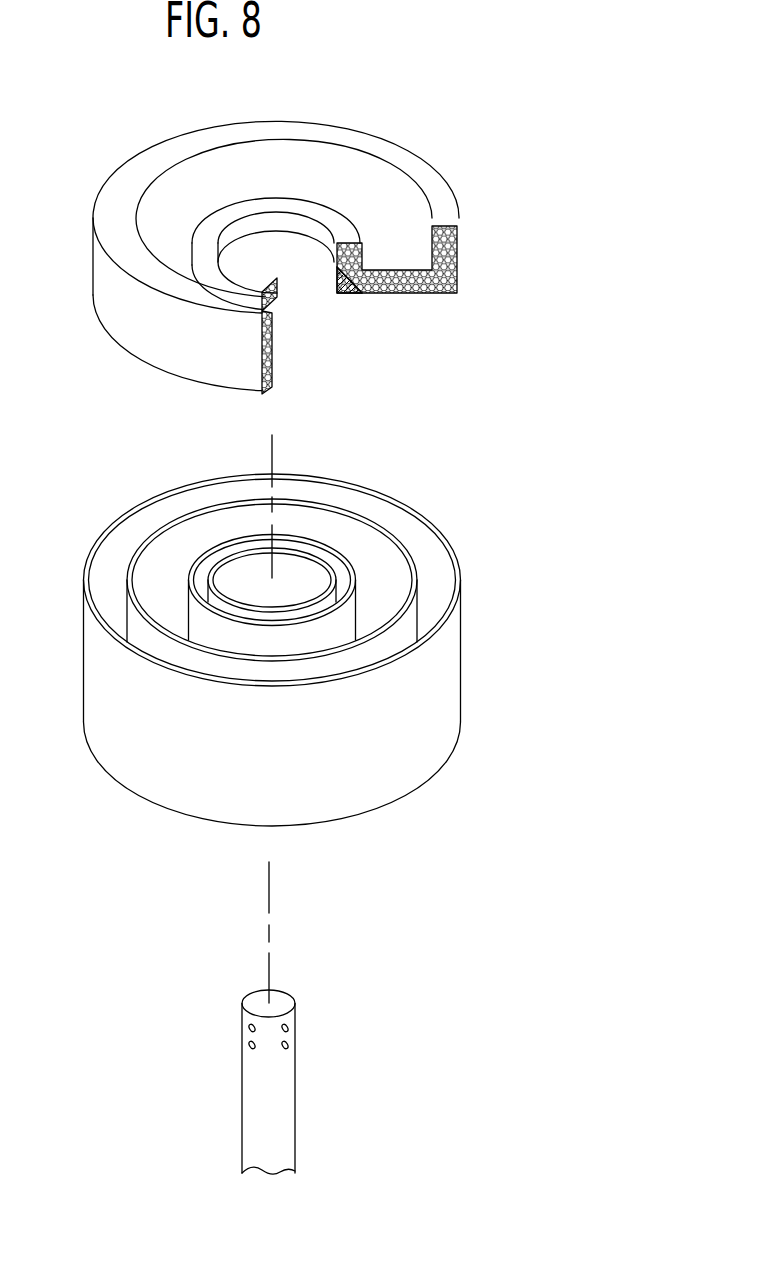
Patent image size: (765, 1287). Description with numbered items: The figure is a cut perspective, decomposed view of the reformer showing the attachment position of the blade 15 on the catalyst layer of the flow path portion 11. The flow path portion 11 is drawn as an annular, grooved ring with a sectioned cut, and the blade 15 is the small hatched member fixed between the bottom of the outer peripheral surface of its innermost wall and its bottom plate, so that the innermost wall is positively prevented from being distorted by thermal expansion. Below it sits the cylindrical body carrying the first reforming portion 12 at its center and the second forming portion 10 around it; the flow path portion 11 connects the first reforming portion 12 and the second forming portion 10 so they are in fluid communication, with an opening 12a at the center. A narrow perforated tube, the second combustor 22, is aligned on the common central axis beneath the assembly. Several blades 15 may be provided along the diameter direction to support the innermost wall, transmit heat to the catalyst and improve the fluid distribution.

The second forming portion 10 is at (310, 625).
The flow path portion 11 is at (445, 261).
The first reforming portion 12 is at (339, 562).
The central opening 12a is at (217, 562).
The blade 15 is at (355, 295).
The second combustor 22 is at (280, 1117).